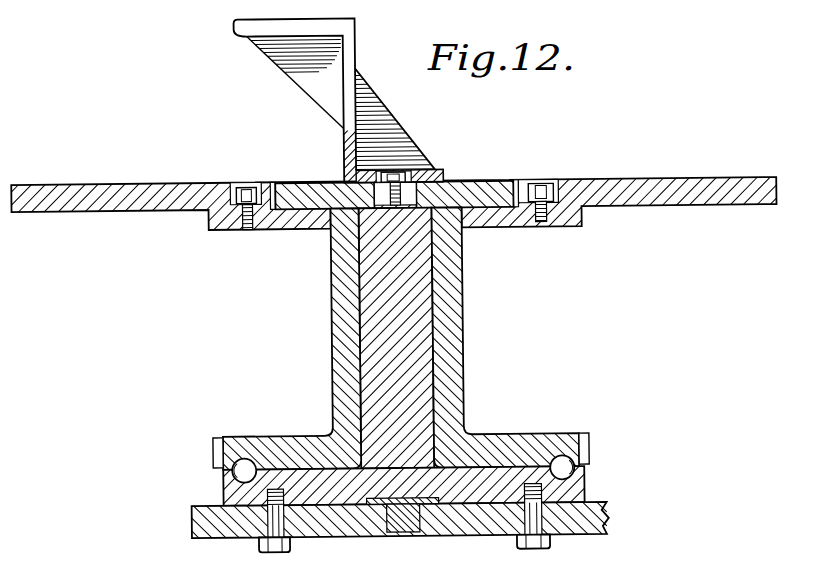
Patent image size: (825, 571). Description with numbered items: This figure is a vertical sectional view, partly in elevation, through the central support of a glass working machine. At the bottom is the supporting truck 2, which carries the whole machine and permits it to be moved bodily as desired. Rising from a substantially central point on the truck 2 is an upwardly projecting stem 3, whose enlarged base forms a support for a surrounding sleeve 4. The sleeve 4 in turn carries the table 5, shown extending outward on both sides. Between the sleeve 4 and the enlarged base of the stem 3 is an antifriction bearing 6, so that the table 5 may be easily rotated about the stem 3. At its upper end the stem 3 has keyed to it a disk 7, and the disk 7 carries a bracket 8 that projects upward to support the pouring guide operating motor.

The supporting truck 2 is at (473, 523).
The stem 3 is at (420, 352).
The sleeve 4 is at (455, 318).
The table 5 is at (135, 205).
The antifriction bearing 6 is at (228, 472).
The disk 7 is at (480, 183).
The bracket 8 is at (352, 80).